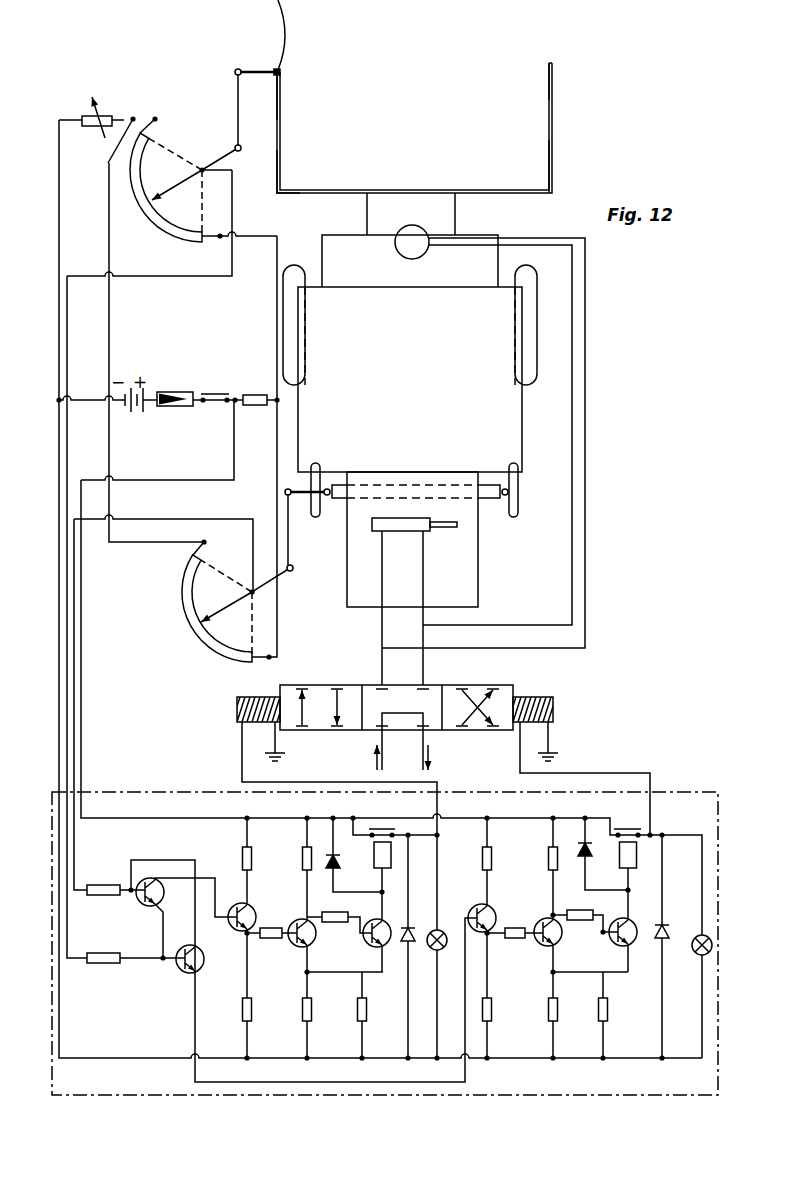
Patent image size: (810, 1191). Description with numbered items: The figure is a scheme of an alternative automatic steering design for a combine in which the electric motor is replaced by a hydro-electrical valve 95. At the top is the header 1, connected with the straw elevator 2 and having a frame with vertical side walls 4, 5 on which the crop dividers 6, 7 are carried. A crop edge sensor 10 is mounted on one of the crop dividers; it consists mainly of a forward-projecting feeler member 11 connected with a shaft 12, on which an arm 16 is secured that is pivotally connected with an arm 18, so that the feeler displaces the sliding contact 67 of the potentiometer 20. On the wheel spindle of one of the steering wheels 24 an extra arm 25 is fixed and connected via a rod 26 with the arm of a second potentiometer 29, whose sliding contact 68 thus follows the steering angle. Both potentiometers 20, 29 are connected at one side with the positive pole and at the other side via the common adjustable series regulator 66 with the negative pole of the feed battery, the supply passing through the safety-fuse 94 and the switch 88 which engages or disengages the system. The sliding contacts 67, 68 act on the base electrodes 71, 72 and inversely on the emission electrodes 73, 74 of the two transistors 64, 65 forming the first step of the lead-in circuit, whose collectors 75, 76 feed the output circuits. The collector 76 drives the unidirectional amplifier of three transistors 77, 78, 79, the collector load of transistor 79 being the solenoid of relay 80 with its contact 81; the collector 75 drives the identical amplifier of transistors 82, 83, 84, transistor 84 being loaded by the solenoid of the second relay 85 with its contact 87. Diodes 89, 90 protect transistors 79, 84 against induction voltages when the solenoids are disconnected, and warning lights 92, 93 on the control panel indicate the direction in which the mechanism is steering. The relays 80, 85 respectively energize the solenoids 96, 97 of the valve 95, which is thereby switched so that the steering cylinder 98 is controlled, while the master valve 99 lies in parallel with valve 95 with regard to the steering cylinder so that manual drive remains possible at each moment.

The header 1 is at (578, 134).
The straw elevator 2 is at (450, 215).
The side wall 4 is at (277, 158).
The side wall 5 is at (552, 163).
The crop divider 6 is at (282, 85).
The crop divider 7 is at (549, 80).
The crop edge sensor 10 is at (305, 33).
The feeler member 11 is at (281, 17).
The shaft 12 is at (270, 70).
The arm 16 is at (250, 70).
The arm 18 is at (238, 100).
The potentiometer 20 is at (186, 147).
The steering wheel 24 is at (318, 519).
The extra arm 25 is at (283, 489).
The rod 26 is at (295, 563).
The potentiometer 29 is at (199, 637).
The transistor 64 is at (200, 968).
The transistor 65 is at (150, 908).
The adjustable series regulator 66 is at (104, 113).
The sliding contact 67 is at (176, 185).
The sliding contact 68 is at (222, 593).
The base electrode 71 is at (170, 968).
The base electrode 72 is at (131, 893).
The emission electrode 73 is at (200, 945).
The emission electrode 74 is at (160, 904).
The collector 75 is at (195, 1017).
The collector 76 is at (178, 877).
The transistor 77 is at (254, 907).
The transistor 78 is at (297, 946).
The transistor 79 is at (366, 946).
The relay 80 is at (374, 854).
The contact 81 is at (388, 828).
The transistor 82 is at (492, 908).
The transistor 83 is at (560, 944).
The transistor 84 is at (632, 946).
The relay 85 is at (637, 866).
The contact 87 is at (625, 827).
The switch 88 is at (220, 393).
The diode 89 is at (343, 862).
The diode 90 is at (592, 851).
The warning light 92 is at (444, 950).
The warning light 93 is at (698, 955).
The safety-fuse 94 is at (176, 392).
The hydro-electrical valve 95 is at (447, 732).
The solenoid 96 is at (257, 697).
The solenoid 97 is at (538, 697).
The steering cylinder 98 is at (432, 532).
The master valve 99 is at (401, 256).